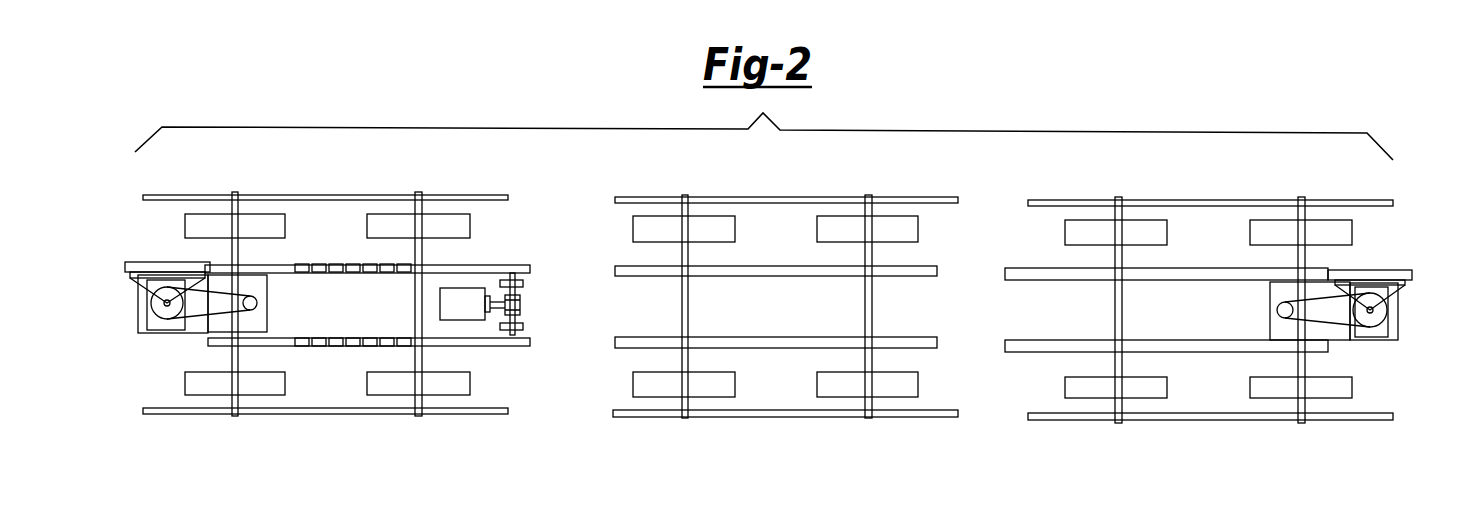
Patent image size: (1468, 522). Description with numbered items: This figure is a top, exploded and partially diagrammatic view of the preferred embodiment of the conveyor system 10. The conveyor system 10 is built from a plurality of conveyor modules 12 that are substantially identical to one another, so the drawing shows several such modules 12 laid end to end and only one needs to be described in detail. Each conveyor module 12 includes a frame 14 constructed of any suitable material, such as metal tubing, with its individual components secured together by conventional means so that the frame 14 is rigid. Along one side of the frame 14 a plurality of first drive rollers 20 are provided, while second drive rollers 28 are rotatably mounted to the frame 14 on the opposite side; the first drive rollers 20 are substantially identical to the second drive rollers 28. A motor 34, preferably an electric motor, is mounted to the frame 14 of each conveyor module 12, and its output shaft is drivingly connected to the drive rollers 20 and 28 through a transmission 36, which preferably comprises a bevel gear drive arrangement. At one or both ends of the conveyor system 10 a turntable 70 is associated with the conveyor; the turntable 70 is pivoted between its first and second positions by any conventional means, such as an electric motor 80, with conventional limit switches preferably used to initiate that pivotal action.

The conveyor system 10 is at (1058, 100).
The conveyor module 12 is at (364, 197).
The frame 14 is at (235, 258).
The first drive rollers 20 is at (384, 346).
The second drive rollers 28 is at (368, 262).
The motor 34 is at (440, 305).
The transmission 36 is at (522, 305).
The turntable 70 is at (1382, 352).
The electric motor 80 is at (257, 304).